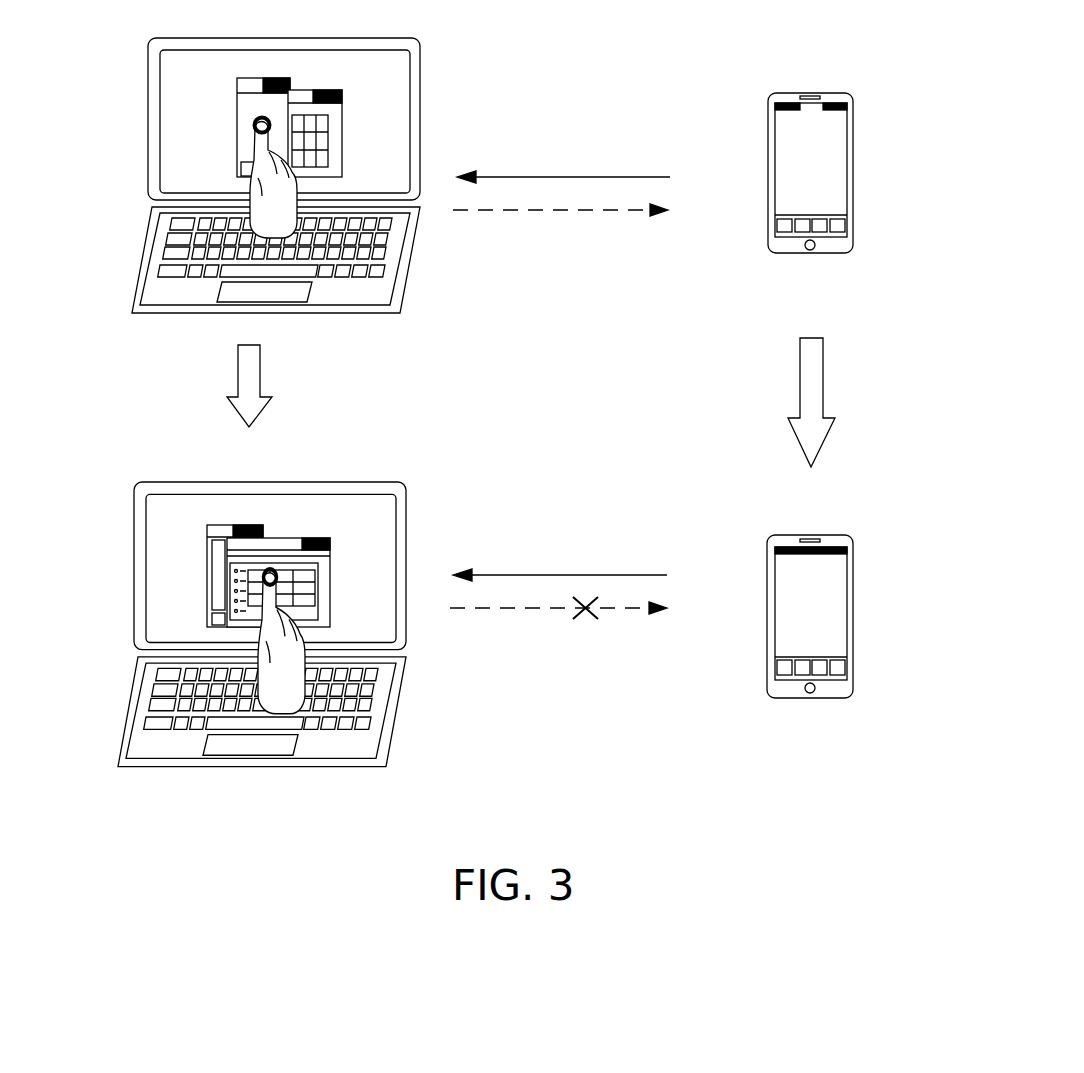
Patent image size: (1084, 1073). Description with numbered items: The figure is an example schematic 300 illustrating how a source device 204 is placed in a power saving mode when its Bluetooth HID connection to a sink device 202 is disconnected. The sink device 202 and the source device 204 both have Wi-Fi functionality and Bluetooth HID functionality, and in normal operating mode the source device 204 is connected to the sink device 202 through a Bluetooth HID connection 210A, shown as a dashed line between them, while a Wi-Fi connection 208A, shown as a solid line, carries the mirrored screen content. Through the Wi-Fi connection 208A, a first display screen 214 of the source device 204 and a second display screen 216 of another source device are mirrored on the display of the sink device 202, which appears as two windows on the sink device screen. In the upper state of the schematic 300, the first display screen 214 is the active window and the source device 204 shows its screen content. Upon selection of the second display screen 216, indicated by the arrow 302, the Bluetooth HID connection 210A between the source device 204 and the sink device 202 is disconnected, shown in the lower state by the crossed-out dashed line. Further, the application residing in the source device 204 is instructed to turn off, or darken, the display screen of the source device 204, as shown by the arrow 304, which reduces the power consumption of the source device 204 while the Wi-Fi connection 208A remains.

The sink device 202 is at (148, 97).
The source device 204 is at (855, 140).
The Wi-Fi connection 208A is at (540, 177).
The Bluetooth HID connection 210A is at (543, 212).
The first display screen 214 is at (263, 78).
The second display screen 216 is at (310, 90).
The schematic 300 is at (668, 787).
The arrow 302 is at (261, 375).
The arrow 304 is at (824, 395).